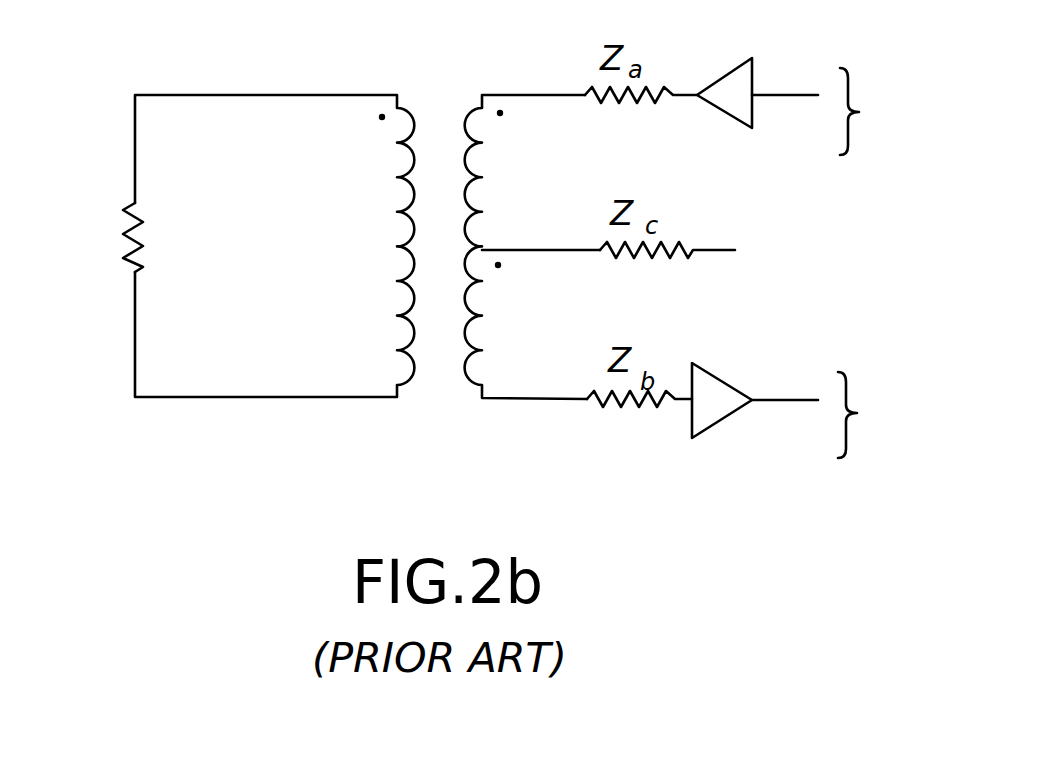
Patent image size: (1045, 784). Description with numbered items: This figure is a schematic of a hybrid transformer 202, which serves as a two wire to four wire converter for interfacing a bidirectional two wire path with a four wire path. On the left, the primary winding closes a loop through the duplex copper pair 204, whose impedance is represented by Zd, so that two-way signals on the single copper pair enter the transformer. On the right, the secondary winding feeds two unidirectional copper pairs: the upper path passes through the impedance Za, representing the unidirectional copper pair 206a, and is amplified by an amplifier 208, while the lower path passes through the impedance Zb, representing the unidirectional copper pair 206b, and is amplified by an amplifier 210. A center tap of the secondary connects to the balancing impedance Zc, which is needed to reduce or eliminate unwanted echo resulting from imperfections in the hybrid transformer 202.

The hybrid transformer 202 is at (437, 398).
The duplex copper pair 204 is at (242, 95).
The unidirectional copper pair 206a is at (850, 111).
The unidirectional copper pair 206b is at (847, 415).
The amplifier 208 is at (750, 128).
The amplifier 210 is at (718, 377).